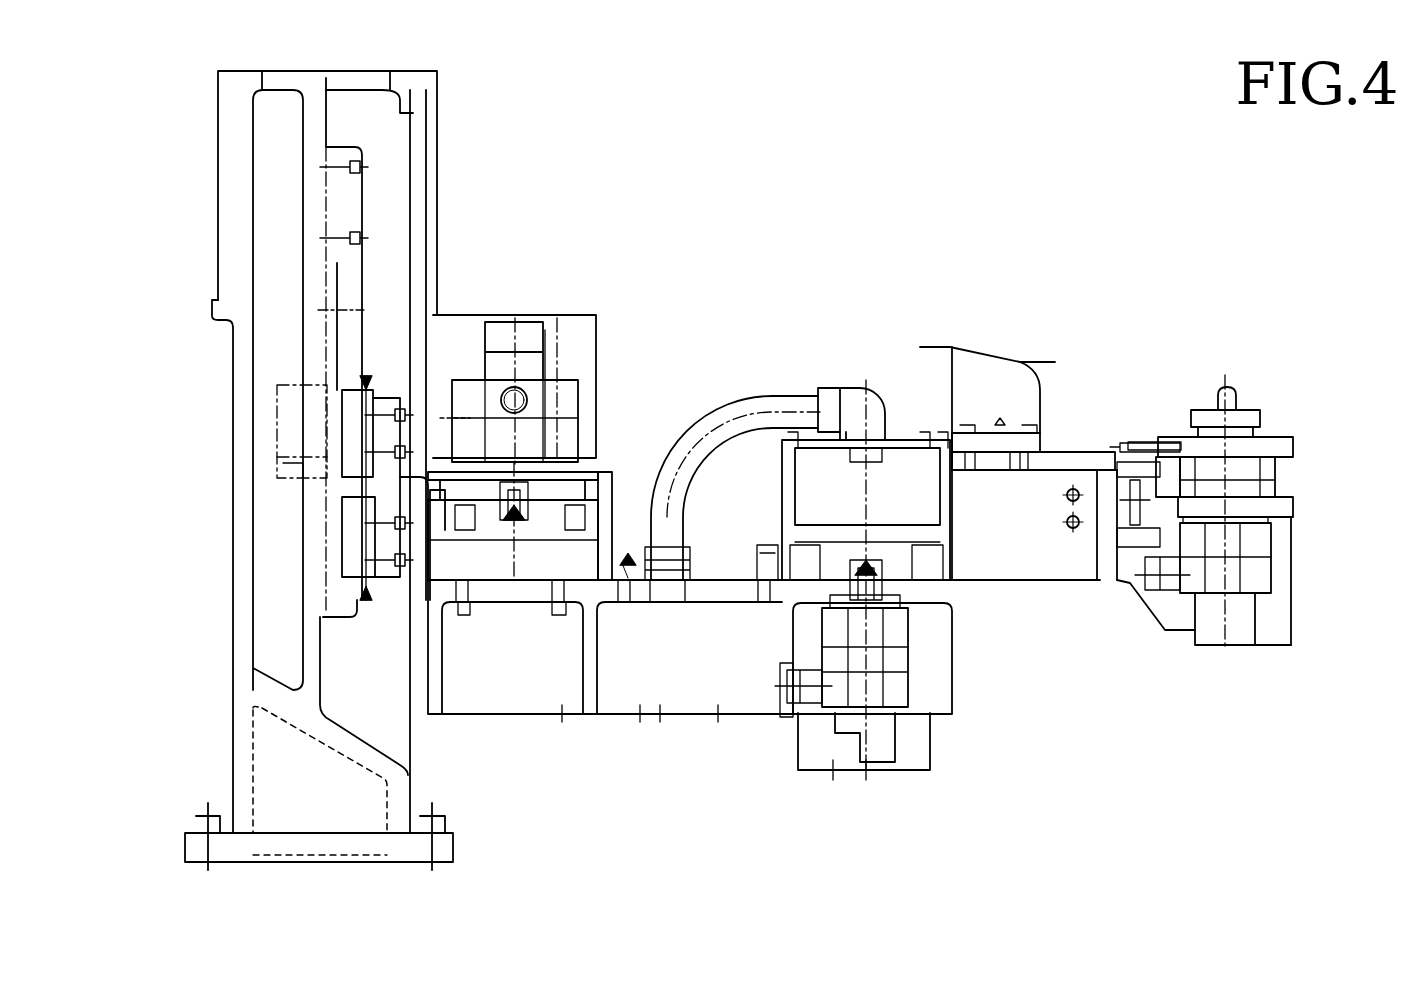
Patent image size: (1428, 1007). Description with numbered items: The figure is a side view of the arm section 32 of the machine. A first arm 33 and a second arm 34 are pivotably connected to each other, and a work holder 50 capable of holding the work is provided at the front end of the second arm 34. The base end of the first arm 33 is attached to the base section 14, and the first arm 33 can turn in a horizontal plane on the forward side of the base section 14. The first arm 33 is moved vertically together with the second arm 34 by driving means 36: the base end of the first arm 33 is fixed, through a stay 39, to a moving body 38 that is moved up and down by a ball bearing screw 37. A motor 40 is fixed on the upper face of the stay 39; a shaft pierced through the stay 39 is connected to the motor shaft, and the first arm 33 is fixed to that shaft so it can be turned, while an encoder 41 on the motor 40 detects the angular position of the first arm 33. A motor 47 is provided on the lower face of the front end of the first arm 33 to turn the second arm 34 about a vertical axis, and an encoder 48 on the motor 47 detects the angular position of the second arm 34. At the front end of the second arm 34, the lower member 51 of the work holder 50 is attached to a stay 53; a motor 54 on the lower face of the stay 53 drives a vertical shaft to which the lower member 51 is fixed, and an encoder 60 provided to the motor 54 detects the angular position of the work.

The base section 14 is at (233, 215).
The arm section 32 is at (1070, 211).
The first arm 33 is at (669, 714).
The second arm 34 is at (1052, 565).
The driving means 36 is at (270, 407).
The ball bearing screw 37 is at (287, 443).
The moving body 38 is at (355, 422).
The stay 39 is at (425, 487).
The motor 40 is at (567, 410).
The encoder 41 is at (537, 337).
The motor 47 is at (895, 657).
The encoder 48 is at (880, 743).
The work holder 50 is at (1340, 412).
The lower member 51 is at (1285, 448).
The stay 53 is at (1250, 508).
The motor 54 is at (1233, 565).
The encoder 60 is at (1243, 630).